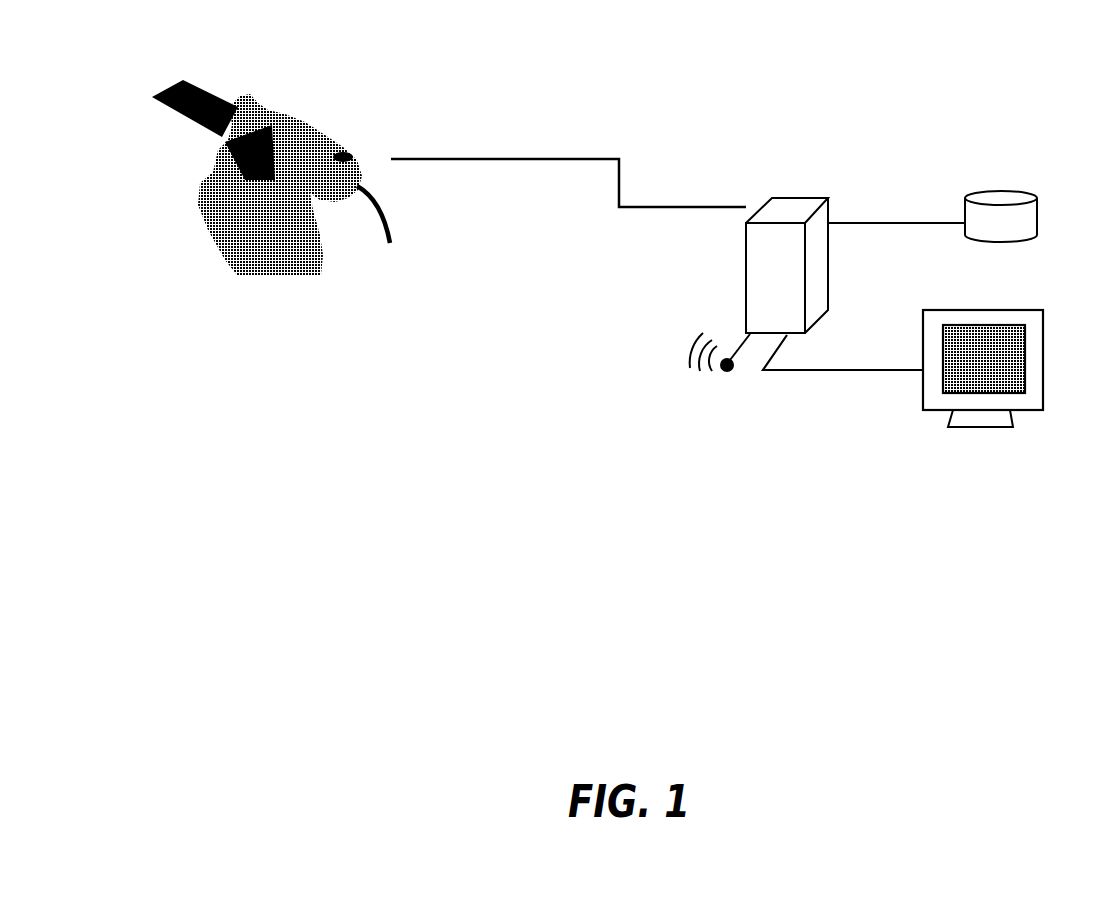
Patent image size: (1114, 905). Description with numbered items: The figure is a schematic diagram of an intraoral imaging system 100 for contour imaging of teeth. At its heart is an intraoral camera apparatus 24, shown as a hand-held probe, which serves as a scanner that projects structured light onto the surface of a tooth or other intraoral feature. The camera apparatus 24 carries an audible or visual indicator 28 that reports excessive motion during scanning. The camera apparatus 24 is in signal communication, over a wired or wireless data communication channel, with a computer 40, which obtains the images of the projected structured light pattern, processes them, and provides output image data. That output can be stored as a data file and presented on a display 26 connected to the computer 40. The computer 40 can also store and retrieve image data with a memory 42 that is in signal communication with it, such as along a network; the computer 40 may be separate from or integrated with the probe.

The intraoral imaging system 100 is at (683, 508).
The audible or visual indicator 28 is at (350, 150).
The intraoral camera apparatus 24 is at (338, 137).
The computer 40 is at (798, 197).
The memory 42 is at (1043, 210).
The display 26 is at (1043, 375).